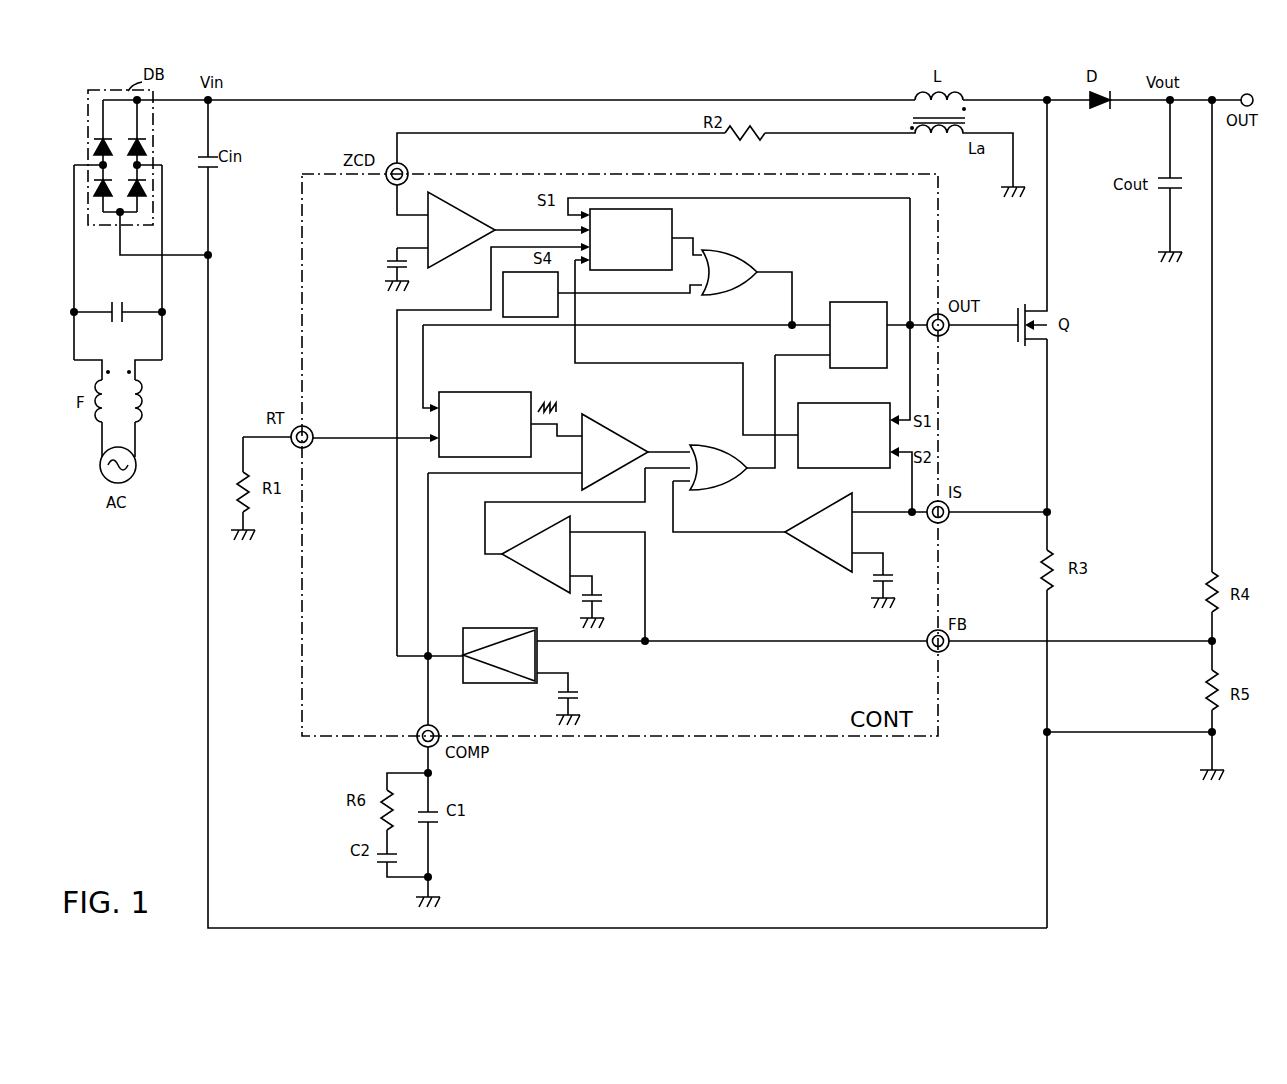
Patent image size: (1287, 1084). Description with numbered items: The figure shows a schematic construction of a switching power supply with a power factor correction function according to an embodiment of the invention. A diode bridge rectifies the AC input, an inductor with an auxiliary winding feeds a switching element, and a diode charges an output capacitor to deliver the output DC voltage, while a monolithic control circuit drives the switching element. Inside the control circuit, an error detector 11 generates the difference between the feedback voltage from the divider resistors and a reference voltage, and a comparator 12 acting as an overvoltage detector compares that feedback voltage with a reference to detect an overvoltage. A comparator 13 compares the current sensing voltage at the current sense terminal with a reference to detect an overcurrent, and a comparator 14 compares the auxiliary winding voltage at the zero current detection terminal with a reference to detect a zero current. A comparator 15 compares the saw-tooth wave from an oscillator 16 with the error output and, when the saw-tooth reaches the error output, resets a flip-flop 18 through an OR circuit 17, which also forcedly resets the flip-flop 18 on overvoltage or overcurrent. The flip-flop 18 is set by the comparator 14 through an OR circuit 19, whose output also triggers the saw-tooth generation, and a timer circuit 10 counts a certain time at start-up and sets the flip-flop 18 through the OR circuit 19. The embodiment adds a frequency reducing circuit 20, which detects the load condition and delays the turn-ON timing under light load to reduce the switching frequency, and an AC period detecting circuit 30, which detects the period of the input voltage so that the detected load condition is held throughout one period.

The timer circuit 10 is at (503, 293).
The error detector 11 is at (490, 628).
The comparator 12 is at (530, 538).
The comparator 13 is at (809, 511).
The comparator 14 is at (465, 209).
The comparator 15 is at (616, 428).
The oscillator 16 is at (462, 392).
The OR circuit 17 is at (715, 445).
The flip-flop 18 is at (858, 302).
The OR circuit 19 is at (736, 250).
The frequency reducing circuit 20 is at (677, 215).
The AC period detecting circuit 30 is at (840, 403).